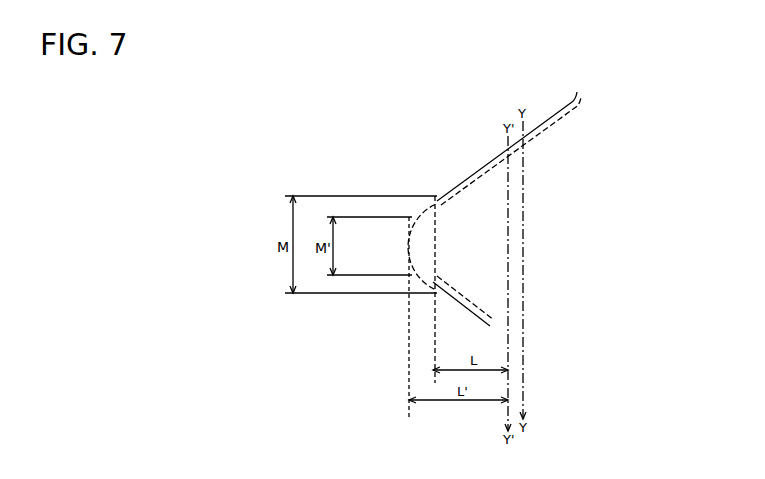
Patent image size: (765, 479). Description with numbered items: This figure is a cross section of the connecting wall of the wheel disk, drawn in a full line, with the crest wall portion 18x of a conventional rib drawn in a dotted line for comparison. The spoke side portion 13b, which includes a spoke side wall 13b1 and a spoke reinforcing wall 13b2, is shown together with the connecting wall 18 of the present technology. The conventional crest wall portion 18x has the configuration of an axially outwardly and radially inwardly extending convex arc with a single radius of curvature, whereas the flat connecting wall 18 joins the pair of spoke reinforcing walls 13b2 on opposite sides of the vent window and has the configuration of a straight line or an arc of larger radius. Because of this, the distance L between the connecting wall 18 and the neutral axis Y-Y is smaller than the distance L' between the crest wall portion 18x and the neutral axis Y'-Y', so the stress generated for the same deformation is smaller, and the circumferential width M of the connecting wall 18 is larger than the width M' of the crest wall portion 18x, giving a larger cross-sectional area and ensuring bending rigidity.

The spoke side portion 13b is at (445, 238).
The spoke side wall 13b1 is at (481, 171).
The spoke reinforcing wall 13b2 is at (488, 135).
The connecting wall 18 is at (415, 289).
The crest wall portion 18x is at (407, 247).